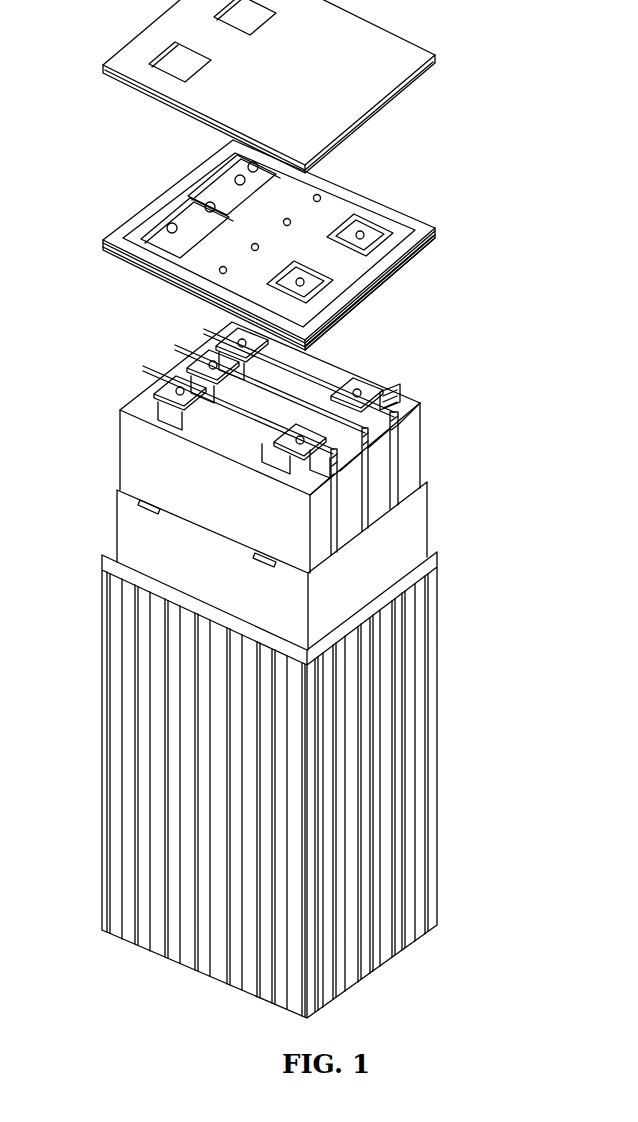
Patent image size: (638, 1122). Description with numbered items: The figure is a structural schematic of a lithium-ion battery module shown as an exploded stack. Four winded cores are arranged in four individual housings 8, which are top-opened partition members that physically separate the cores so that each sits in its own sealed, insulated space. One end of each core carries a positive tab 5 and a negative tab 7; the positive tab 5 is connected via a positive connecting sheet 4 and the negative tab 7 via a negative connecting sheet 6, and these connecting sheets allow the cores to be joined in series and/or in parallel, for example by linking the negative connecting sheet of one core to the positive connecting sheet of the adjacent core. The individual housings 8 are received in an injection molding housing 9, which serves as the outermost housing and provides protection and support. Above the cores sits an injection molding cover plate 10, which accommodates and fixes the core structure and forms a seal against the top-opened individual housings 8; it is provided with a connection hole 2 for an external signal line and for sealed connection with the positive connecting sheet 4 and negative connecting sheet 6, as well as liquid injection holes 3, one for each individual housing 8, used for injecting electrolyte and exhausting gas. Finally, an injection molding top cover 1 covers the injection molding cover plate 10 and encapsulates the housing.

The injection molding top cover 1 is at (433, 53).
The connection hole 2 is at (393, 208).
The liquid injection hole 3 is at (215, 279).
The positive connecting sheet 4 is at (377, 380).
The positive tab 5 is at (397, 402).
The negative connecting sheet 6 is at (402, 442).
The negative tab 7 is at (402, 462).
The individual housing 8 is at (427, 513).
The injection molding housing 9 is at (440, 730).
The injection molding cover plate 10 is at (403, 259).